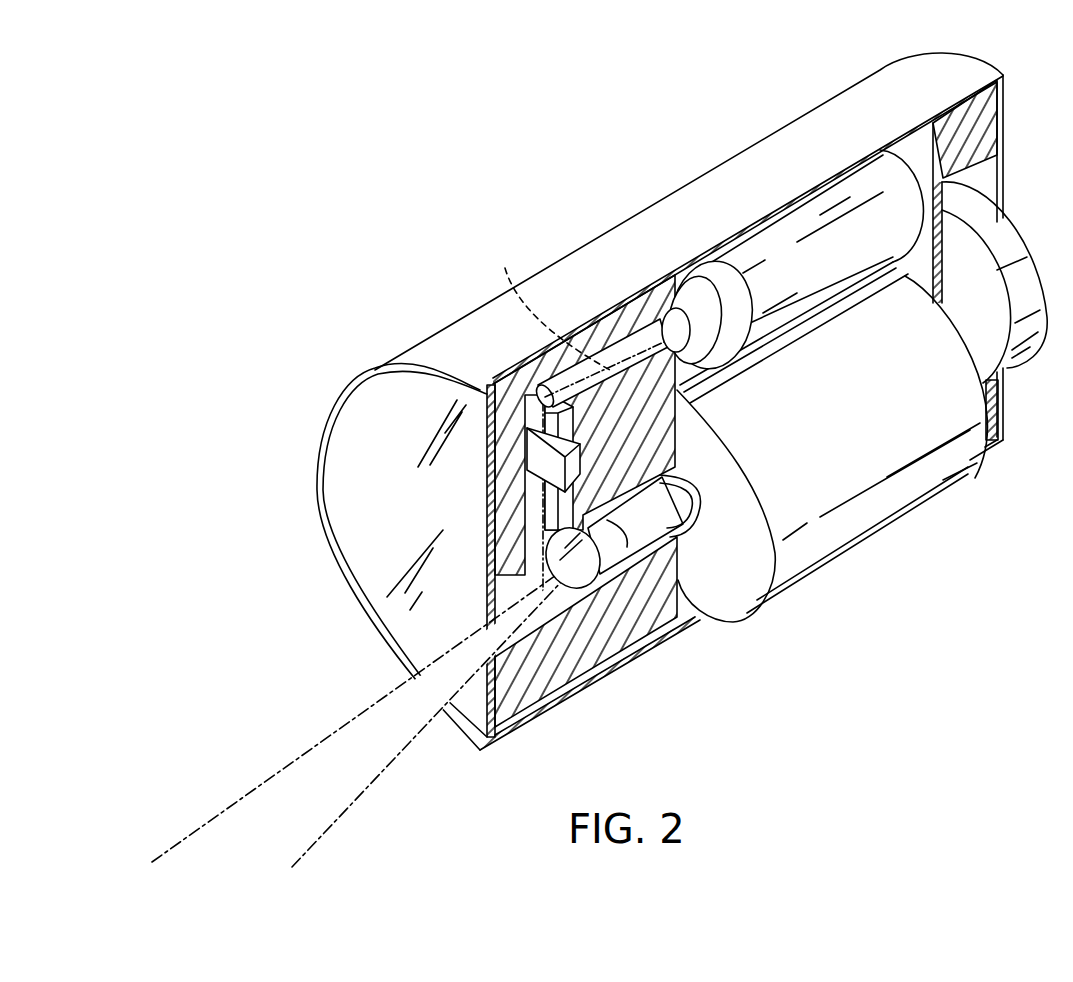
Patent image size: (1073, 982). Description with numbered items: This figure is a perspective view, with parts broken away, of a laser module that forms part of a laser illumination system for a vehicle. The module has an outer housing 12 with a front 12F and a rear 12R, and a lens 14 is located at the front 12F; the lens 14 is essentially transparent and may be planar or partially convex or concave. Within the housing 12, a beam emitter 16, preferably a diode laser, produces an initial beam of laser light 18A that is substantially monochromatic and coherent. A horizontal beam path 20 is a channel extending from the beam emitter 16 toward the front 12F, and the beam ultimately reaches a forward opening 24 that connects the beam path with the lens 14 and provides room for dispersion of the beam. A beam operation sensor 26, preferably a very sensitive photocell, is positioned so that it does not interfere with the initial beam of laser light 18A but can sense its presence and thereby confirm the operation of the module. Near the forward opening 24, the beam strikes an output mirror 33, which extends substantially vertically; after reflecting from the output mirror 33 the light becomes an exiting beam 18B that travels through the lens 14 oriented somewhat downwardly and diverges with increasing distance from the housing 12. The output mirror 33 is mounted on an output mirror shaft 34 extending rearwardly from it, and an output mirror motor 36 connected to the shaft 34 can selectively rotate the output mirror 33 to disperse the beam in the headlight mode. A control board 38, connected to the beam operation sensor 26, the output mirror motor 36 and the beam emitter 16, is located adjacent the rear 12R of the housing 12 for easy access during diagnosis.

The outer housing 12 is at (570, 268).
The front 12F is at (338, 405).
The rear 12R is at (1006, 105).
The lens 14 is at (370, 562).
The beam emitter 16 is at (817, 203).
The initial beam of laser light 18A is at (546, 304).
The exiting beam 18B is at (340, 727).
The horizontal beam path 20 is at (643, 330).
The forward opening 24 is at (503, 657).
The beam operation sensor 26 is at (557, 468).
The output mirror 33 is at (587, 590).
The output mirror shaft 34 is at (657, 537).
The output mirror motor 36 is at (873, 540).
The control board 38 is at (1025, 237).